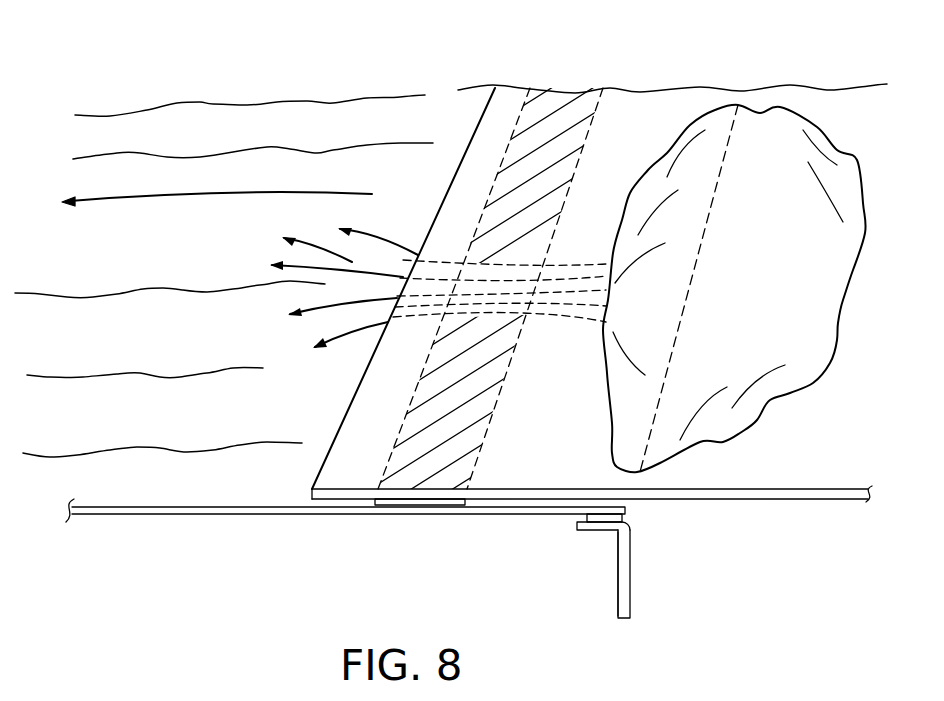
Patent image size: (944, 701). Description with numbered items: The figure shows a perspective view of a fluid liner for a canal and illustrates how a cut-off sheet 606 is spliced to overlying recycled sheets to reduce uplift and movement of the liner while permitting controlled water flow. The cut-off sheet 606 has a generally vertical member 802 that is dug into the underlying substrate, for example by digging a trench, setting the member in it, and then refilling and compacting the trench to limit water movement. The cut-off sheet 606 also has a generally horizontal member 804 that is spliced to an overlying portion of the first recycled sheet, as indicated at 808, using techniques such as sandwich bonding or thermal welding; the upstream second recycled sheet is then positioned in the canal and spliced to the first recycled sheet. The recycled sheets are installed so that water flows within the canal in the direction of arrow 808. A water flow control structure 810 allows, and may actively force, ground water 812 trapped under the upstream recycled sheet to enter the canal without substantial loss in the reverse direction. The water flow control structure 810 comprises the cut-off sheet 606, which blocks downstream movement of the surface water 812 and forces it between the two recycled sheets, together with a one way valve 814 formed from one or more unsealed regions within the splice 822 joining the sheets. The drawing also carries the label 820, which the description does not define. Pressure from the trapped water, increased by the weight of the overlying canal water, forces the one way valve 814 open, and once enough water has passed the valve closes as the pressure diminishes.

The generally vertical member 802 is at (240, 58).
The generally horizontal member 804 is at (632, 588).
The cut-off sheet 606 is at (616, 571).
The water flow arrow 808 is at (395, 274).
The water flow control structure 810 is at (738, 465).
The ground water 812 is at (815, 387).
The one way valve 814 is at (535, 318).
The beam 820 is at (540, 263).
The splice 822 is at (427, 500).